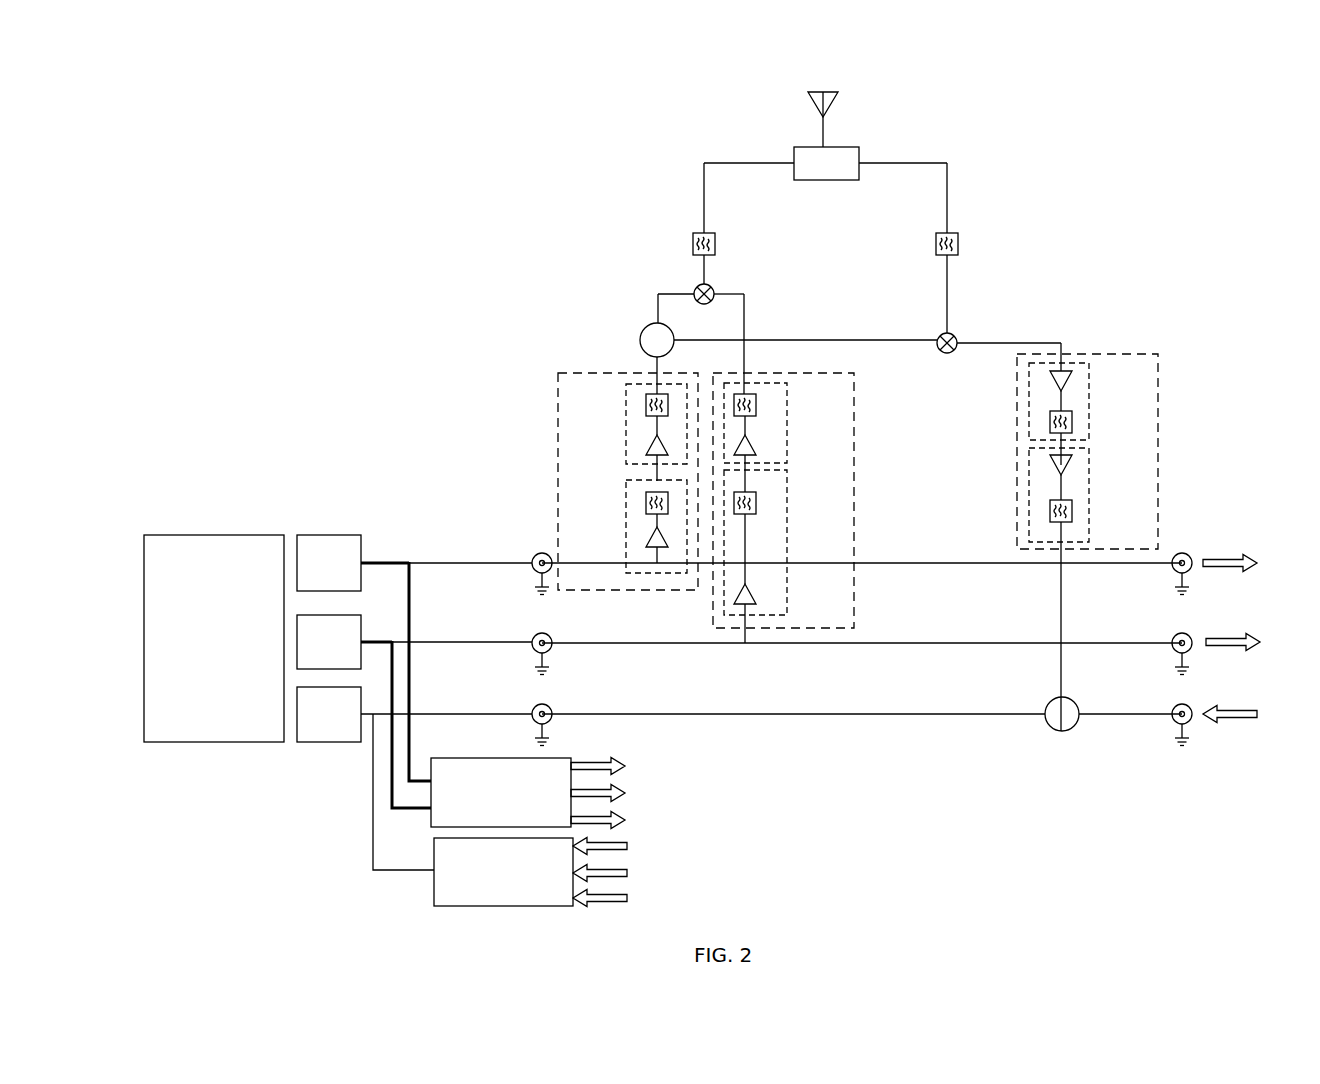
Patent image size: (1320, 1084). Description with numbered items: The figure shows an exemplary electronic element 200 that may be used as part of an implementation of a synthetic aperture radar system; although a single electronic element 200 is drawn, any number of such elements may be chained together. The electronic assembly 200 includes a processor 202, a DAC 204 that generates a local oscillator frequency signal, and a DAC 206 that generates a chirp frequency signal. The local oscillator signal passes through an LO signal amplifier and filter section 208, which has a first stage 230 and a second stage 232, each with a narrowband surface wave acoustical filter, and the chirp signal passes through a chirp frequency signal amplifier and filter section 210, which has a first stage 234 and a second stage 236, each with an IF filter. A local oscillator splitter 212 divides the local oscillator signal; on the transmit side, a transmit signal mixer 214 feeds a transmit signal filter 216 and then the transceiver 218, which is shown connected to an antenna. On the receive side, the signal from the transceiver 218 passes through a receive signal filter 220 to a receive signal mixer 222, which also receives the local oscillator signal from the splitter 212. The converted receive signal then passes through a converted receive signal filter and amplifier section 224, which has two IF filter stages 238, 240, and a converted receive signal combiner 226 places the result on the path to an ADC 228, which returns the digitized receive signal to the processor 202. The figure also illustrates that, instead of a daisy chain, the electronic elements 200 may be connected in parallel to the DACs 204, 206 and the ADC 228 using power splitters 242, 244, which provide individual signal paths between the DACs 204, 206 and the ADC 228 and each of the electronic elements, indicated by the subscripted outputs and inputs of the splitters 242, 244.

The electronic element 200 is at (744, 80).
The processor 202 is at (214, 638).
The DAC 204 is at (329, 563).
The DAC 206 is at (329, 642).
The LO signal amplifier and filter section 208 is at (599, 481).
The chirp frequency signal amplifier and filter section 210 is at (813, 508).
The local oscillator splitter 212 is at (646, 334).
The transmit signal mixer 214 is at (713, 288).
The transmit signal filter 216 is at (716, 248).
The transceiver 218 is at (860, 153).
The receive signal filter 220 is at (935, 244).
The receive signal mixer 222 is at (936, 338).
The converted receive signal filter and amplifier section 224 is at (1117, 525).
The converted receive signal combiner 226 is at (1048, 705).
The ADC 228 is at (329, 714).
The first stage 230 is at (628, 526).
The second stage 232 is at (626, 422).
The first stage 234 is at (787, 545).
The second stage 236 is at (787, 423).
The IF filter stage 238 is at (1089, 403).
The IF filter stage 240 is at (1089, 497).
The power splitter 242 is at (550, 794).
The power splitter 244 is at (554, 873).